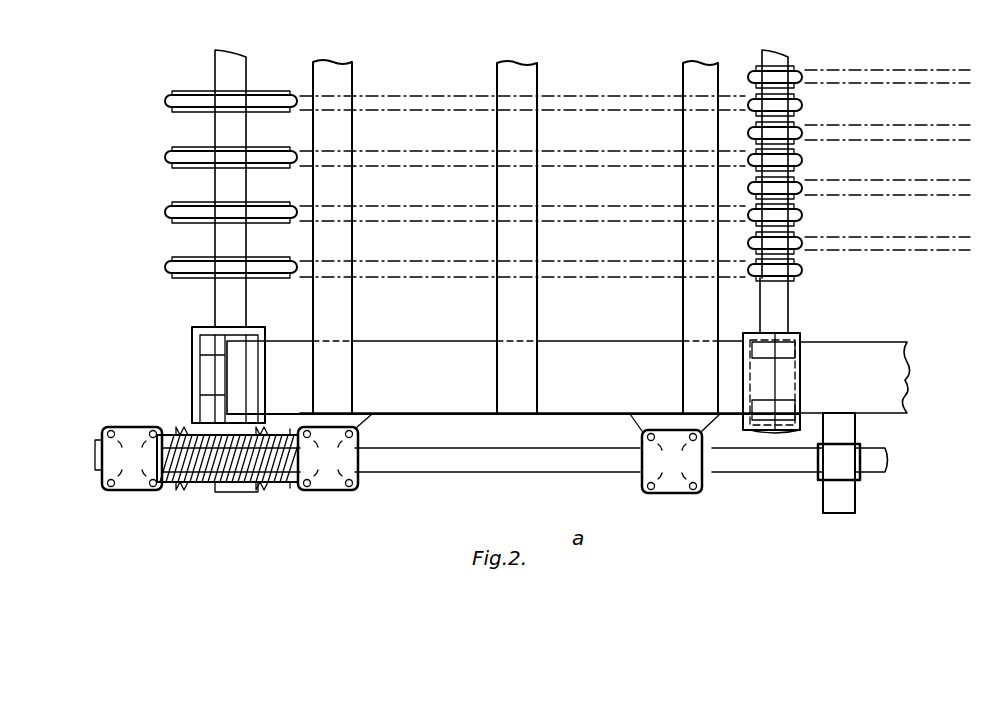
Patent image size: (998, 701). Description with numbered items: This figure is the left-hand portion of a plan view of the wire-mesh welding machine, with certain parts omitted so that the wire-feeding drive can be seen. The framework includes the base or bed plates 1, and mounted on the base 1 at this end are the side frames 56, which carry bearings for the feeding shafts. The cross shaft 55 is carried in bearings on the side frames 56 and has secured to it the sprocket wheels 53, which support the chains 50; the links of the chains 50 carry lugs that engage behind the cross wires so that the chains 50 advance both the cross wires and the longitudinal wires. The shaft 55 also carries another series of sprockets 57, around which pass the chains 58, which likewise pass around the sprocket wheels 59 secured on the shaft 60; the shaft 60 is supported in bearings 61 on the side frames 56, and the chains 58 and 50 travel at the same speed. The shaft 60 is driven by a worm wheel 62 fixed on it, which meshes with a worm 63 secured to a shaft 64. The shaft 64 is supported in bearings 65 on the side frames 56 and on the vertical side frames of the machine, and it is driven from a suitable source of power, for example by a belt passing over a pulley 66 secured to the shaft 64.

The base or bed plates 1 is at (880, 368).
The chains 50 is at (930, 87).
The sprocket wheels 53 is at (800, 75).
The cross shaft 55 is at (792, 314).
The side frames 56 is at (283, 342).
The sprockets 57 is at (755, 105).
The chains 58 is at (582, 108).
The sprocket wheels 59 is at (165, 101).
The shaft 60 is at (236, 242).
The bearings 61 is at (200, 362).
The worm wheel 62 is at (185, 484).
The worm 63 is at (266, 485).
The shaft 64 is at (455, 472).
The bearings 65 is at (112, 468).
The pulley 66 is at (840, 505).